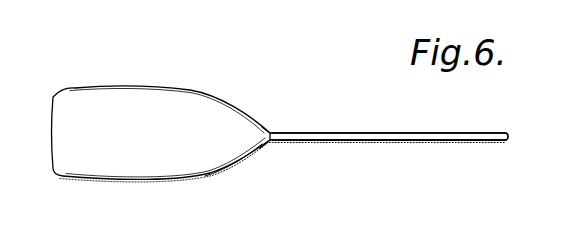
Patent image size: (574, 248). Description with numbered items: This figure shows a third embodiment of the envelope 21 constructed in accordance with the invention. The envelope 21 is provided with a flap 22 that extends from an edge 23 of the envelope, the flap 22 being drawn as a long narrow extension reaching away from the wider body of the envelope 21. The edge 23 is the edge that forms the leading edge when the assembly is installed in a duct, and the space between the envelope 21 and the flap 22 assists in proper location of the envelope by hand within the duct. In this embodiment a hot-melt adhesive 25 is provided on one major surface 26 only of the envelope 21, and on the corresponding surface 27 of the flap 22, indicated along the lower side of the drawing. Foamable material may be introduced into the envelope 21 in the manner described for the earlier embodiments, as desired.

The envelope 21 is at (110, 100).
The flap 22 is at (457, 133).
The edge 23 is at (273, 130).
The hot-melt adhesive 25 is at (183, 190).
The major surface 26 is at (212, 189).
The surface of the flap 27 is at (385, 146).